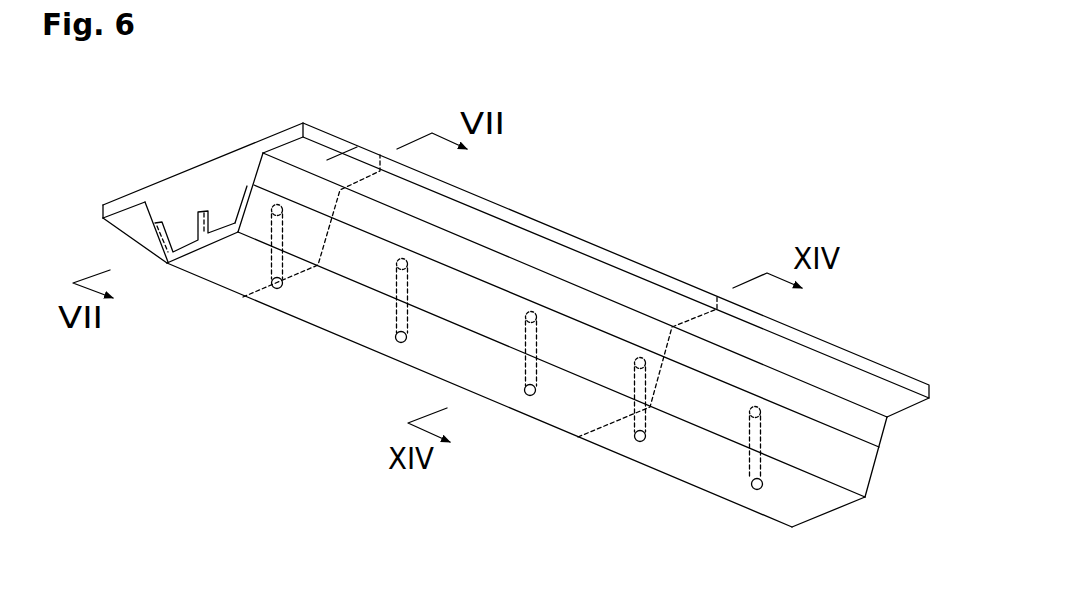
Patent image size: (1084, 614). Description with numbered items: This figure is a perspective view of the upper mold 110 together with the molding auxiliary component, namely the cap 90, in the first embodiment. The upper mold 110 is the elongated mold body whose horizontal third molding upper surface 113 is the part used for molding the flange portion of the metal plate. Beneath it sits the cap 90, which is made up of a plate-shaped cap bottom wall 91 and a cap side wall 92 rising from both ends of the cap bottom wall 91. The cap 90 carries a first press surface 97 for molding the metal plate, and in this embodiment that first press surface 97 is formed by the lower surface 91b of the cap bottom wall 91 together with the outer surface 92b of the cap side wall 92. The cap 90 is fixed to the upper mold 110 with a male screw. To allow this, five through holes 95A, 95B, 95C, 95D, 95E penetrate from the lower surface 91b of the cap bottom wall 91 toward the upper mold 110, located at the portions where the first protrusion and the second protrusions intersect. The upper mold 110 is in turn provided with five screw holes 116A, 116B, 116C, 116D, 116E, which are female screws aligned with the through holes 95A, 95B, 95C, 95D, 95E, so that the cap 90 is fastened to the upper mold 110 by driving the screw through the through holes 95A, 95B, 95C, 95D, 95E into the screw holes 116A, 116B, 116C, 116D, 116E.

The upper mold 110 is at (218, 165).
The third molding upper surface 113 is at (132, 220).
The cap 90 is at (220, 272).
The cap bottom wall 91 is at (190, 272).
The cap side wall 92 is at (160, 256).
The lower surface of the cap bottom wall 91b is at (810, 507).
The outer surface of the cap side wall 92b is at (843, 473).
The first press surface 97 is at (550, 418).
The through hole 95A is at (278, 289).
The through hole 95B is at (401, 343).
The through hole 95C is at (531, 396).
The through hole 95D is at (641, 442).
The through hole 95E is at (757, 490).
The screw hole 116A is at (278, 205).
The screw hole 116B is at (407, 262).
The screw hole 116C is at (535, 313).
The screw hole 116D is at (645, 361).
The screw hole 116E is at (762, 408).